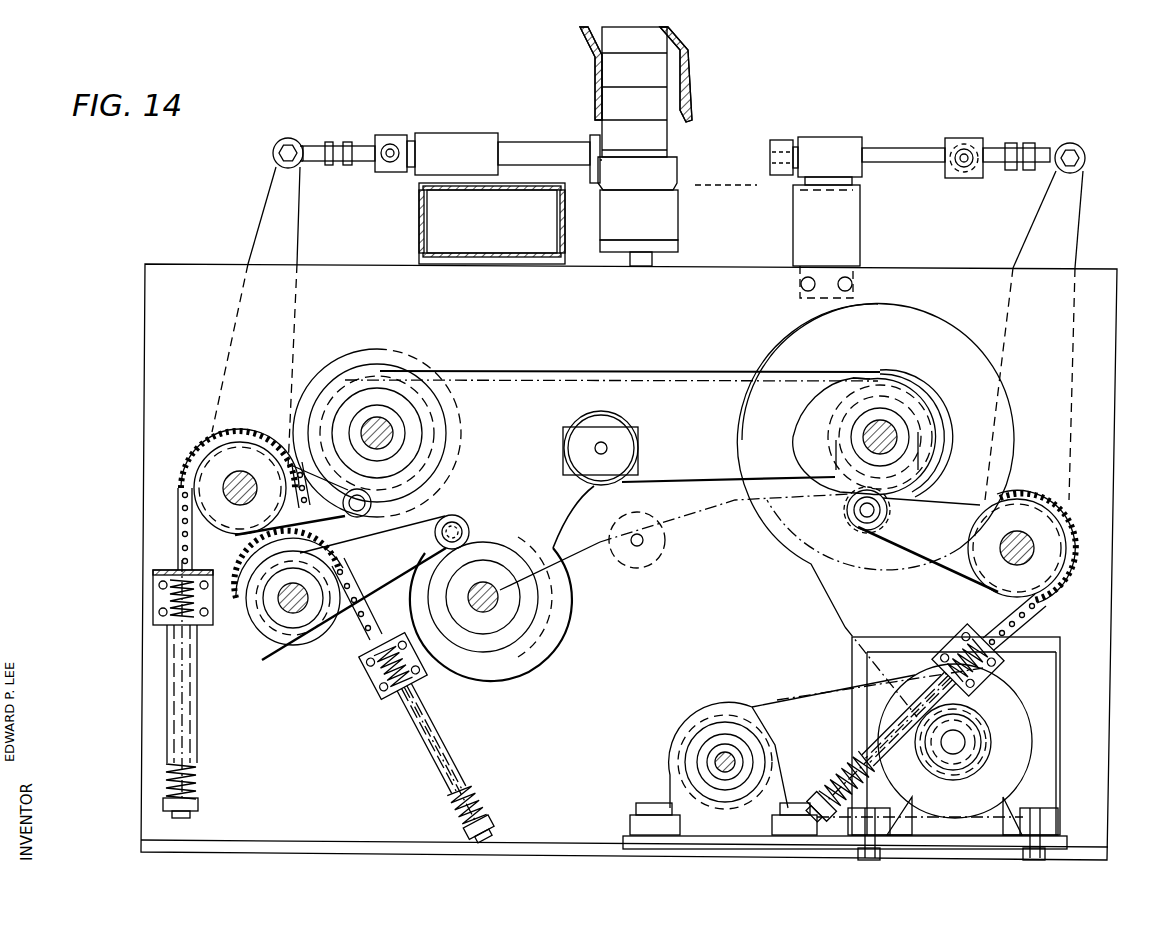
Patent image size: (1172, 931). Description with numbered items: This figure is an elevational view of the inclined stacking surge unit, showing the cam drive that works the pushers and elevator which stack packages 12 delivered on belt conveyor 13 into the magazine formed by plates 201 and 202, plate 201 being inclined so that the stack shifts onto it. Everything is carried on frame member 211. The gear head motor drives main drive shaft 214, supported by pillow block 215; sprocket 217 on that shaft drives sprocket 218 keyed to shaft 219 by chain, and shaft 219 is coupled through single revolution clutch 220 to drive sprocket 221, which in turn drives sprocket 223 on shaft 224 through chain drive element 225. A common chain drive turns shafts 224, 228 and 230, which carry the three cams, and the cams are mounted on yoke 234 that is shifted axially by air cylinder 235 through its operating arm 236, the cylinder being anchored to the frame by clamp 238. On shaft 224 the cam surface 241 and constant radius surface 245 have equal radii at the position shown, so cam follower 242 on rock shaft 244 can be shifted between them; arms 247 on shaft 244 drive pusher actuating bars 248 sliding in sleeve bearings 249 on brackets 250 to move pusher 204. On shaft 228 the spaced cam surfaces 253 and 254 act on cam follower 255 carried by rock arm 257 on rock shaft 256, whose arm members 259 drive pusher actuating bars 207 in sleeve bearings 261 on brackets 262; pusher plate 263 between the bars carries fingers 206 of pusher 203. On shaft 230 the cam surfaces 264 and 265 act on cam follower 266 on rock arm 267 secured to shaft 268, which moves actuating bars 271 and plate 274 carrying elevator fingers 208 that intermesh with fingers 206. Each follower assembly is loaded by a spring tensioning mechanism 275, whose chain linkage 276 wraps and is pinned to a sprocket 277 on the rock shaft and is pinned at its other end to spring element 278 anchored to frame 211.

The packages 12 is at (634, 92).
The belt conveyor 13 is at (722, 187).
The plate 201 is at (593, 85).
The plate 202 is at (688, 82).
The pusher 203 is at (591, 140).
The pusher 204 is at (779, 140).
The fingers 206 is at (677, 160).
The pusher actuating bar 207 is at (357, 146).
The fingers 208 is at (679, 230).
The frame member 211 is at (1116, 358).
The main drive shaft 214 is at (712, 760).
The pillow block 215 is at (668, 794).
The sprocket 217 is at (780, 691).
The drive sprocket 218 is at (875, 716).
The shaft 219 is at (966, 742).
The single revolution clutch 220 is at (1066, 662).
The drive sprocket 221 is at (940, 772).
The sprocket 223 is at (895, 300).
The shaft 224 is at (887, 428).
The chain drive element 225 is at (800, 584).
The shaft 228 is at (392, 428).
The shaft 230 is at (497, 612).
The yoke 234 is at (643, 371).
The air cylinder 235 is at (660, 400).
The operating arm 236 is at (563, 448).
The clamp 238 is at (642, 472).
The cam surface 241 is at (793, 422).
The cam follower 242 is at (860, 527).
The rock shaft 244 is at (1036, 545).
The constant radius surface 245 is at (826, 414).
The arm 247 is at (1036, 214).
The pusher actuating bar 248 is at (990, 146).
The sleeve bearing 249 is at (840, 137).
The bracket 250 is at (860, 224).
The cam surface 253 is at (420, 352).
The cam surface 254 is at (352, 352).
The cam follower 255 is at (371, 510).
The rock shaft 256 is at (228, 486).
The rock arm 257 is at (262, 536).
The arm member 259 is at (262, 208).
The sleeve bearing 261 is at (465, 140).
The bracket 262 is at (419, 193).
The pusher plate 263 is at (600, 183).
The cam surface 264 is at (556, 577).
The cam surface 265 is at (473, 680).
The cam follower 266 is at (460, 517).
The rock arm 267 is at (372, 540).
The shaft 268 is at (287, 614).
The actuating bar 271 is at (640, 268).
The plate 274 is at (679, 248).
The spring tensioning mechanism 275 is at (175, 560).
The chain linkage 276 is at (179, 497).
The sprocket 277 is at (1050, 490).
The spring element 278 is at (198, 783).